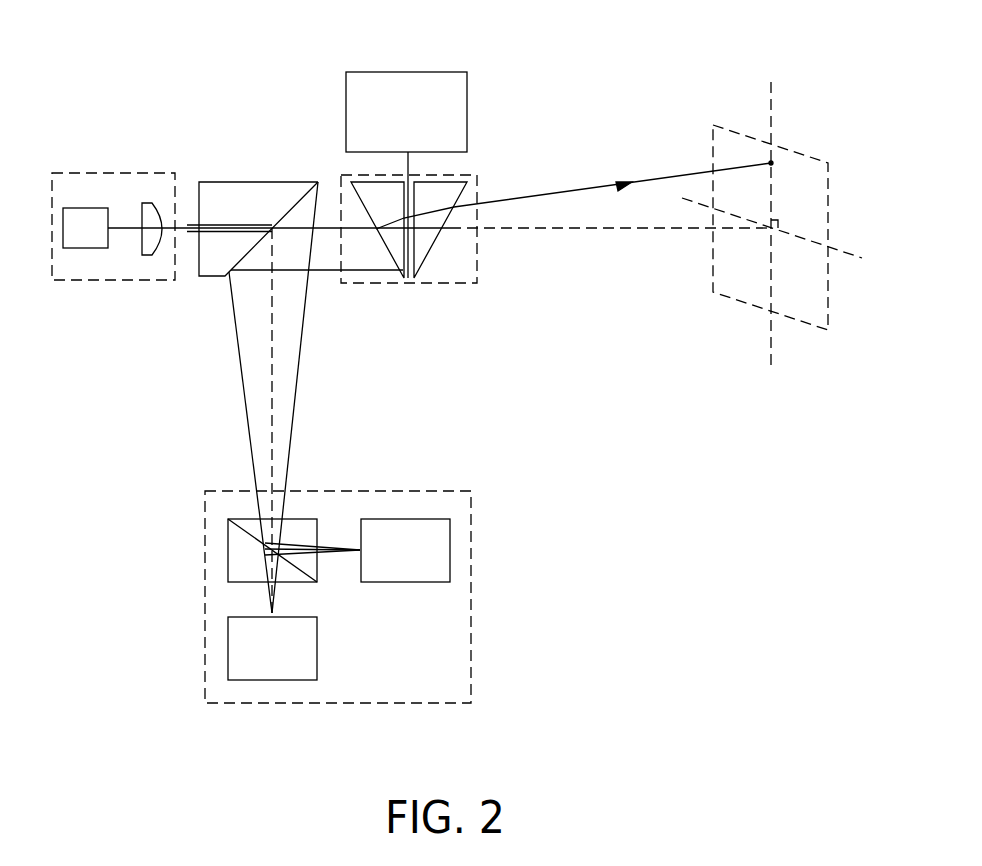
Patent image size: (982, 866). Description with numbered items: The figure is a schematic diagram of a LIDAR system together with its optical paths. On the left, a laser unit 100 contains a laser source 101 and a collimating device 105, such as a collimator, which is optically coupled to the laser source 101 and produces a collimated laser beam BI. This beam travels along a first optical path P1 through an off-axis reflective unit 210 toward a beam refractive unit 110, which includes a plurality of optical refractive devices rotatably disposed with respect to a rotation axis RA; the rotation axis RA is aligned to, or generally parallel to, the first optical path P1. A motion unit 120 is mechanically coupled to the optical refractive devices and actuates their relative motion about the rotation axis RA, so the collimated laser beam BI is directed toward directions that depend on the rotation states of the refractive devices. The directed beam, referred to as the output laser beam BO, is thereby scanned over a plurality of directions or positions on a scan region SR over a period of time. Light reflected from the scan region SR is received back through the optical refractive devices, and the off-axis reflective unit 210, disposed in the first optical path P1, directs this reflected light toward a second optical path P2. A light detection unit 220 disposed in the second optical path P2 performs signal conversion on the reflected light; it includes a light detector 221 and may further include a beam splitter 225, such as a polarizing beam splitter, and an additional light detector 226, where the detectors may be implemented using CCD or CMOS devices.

The laser unit 100 is at (135, 173).
The laser source 101 is at (88, 208).
The collimating device 105 is at (150, 255).
The beam refractive unit 110 is at (473, 175).
The motion unit 120 is at (408, 72).
The off-axis reflective unit 210 is at (260, 182).
The light detection unit 220 is at (390, 491).
The light detector 221 is at (228, 651).
The beam splitter 225 is at (228, 555).
The light detector 226 is at (450, 548).
The collimated laser beam BI is at (187, 232).
The output laser beam BO is at (672, 177).
The first optical path P1 is at (323, 230).
The second optical path P2 is at (302, 410).
The rotation axis RA is at (462, 230).
The scan region SR is at (797, 152).